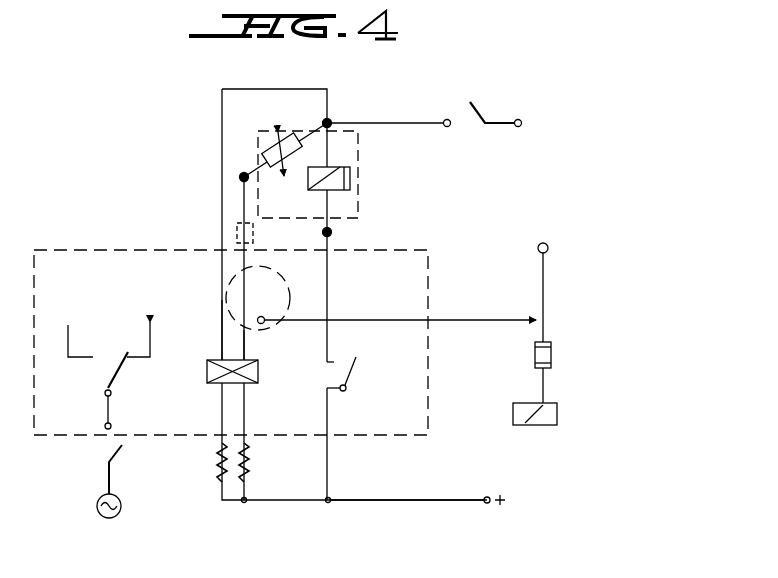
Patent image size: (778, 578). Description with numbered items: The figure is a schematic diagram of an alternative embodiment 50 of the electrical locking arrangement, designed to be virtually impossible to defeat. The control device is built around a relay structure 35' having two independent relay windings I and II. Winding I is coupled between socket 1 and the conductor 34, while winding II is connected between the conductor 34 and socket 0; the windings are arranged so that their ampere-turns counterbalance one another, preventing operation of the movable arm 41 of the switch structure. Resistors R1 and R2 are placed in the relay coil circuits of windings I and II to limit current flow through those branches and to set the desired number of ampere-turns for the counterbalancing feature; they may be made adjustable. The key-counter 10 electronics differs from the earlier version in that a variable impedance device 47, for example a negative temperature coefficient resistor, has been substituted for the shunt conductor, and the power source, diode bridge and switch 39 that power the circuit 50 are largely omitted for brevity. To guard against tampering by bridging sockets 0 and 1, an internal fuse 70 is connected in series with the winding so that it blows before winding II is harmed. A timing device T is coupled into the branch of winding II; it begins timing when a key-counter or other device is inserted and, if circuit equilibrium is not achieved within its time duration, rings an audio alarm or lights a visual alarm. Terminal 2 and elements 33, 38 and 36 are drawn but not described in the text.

The embodiment 50 is at (160, 118).
The socket 1 is at (340, 114).
The socket 0 is at (236, 186).
The terminal 2 is at (348, 240).
The negative supply lead 33 is at (413, 123).
The switch 39 is at (484, 110).
The key-counter 10 is at (360, 160).
The variable impedance device 47 is at (297, 155).
The relay coil 38 is at (308, 187).
The timing device T is at (237, 233).
The relay winding I is at (220, 343).
The relay winding II is at (247, 353).
The relay structure 35' is at (253, 372).
The movable arm 41 is at (112, 376).
The switch contact 36 is at (349, 381).
The internal fuse 70 is at (553, 358).
The resistor R1 is at (203, 462).
The resistor R2 is at (254, 462).
The conductor 34 is at (428, 502).